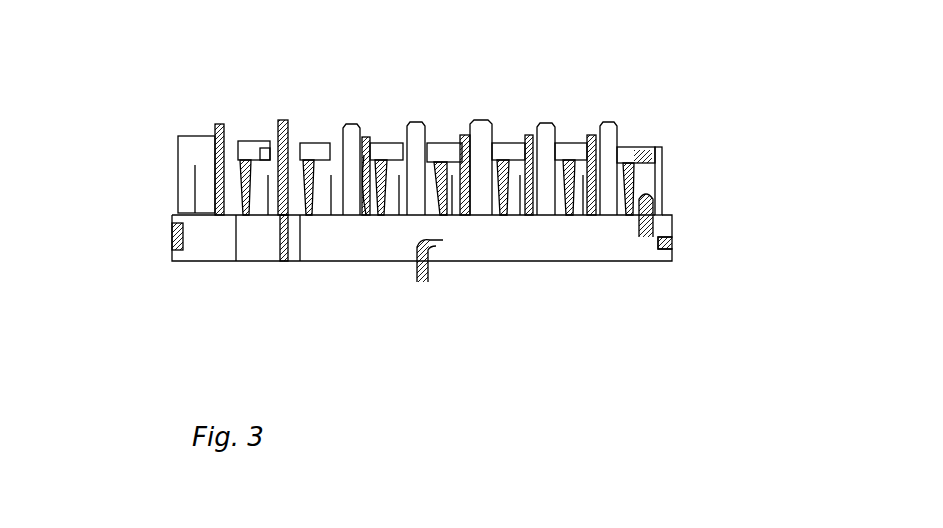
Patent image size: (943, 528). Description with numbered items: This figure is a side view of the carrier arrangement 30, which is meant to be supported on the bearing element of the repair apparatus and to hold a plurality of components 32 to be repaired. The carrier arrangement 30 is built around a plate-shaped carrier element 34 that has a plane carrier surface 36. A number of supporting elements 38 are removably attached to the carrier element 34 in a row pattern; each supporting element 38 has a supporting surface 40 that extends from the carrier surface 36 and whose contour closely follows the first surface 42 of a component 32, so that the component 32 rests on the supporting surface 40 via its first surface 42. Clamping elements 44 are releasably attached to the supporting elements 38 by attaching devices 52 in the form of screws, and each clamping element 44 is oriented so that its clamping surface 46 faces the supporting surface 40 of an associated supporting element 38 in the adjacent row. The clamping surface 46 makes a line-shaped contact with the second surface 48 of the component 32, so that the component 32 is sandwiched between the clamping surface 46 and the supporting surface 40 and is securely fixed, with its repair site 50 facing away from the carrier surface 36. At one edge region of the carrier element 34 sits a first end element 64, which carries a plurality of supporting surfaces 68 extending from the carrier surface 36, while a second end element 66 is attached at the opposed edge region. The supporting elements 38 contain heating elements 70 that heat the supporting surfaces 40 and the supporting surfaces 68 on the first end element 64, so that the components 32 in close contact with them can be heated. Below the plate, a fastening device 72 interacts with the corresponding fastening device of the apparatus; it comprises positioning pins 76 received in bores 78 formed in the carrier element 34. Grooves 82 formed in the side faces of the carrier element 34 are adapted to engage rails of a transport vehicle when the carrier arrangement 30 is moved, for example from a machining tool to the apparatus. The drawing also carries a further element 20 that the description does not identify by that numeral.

The heat sink 20 is at (195, 191).
The carrier arrangement 30 is at (718, 188).
The component 32 is at (300, 261).
The carrier element 34 is at (619, 261).
The carrier surface 36 is at (662, 213).
The supporting element 38 is at (254, 161).
The supporting surface 40 is at (274, 133).
The first surface 42 is at (286, 261).
The clamping element 44 is at (390, 155).
The clamping surface 46 is at (366, 215).
The second surface 48 is at (372, 150).
The repair site 50 is at (230, 124).
The attaching device 52 is at (380, 152).
The first end element 64 is at (178, 158).
The second end element 66 is at (662, 166).
The supporting surfaces 68 is at (219, 124).
The heating element 70 is at (266, 220).
The fastening device 72 is at (480, 290).
The positioning pin 76 is at (463, 261).
The bore 78 is at (443, 240).
The groove 82 is at (172, 236).